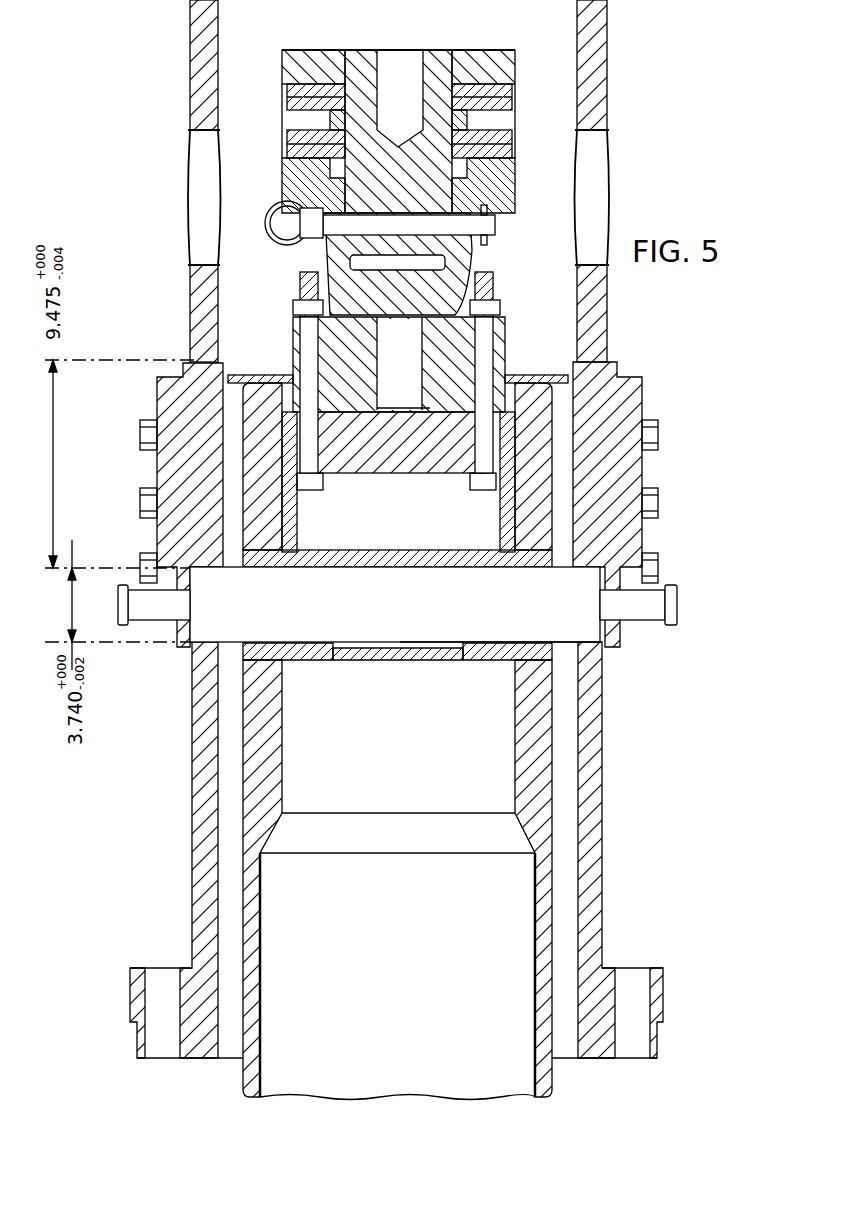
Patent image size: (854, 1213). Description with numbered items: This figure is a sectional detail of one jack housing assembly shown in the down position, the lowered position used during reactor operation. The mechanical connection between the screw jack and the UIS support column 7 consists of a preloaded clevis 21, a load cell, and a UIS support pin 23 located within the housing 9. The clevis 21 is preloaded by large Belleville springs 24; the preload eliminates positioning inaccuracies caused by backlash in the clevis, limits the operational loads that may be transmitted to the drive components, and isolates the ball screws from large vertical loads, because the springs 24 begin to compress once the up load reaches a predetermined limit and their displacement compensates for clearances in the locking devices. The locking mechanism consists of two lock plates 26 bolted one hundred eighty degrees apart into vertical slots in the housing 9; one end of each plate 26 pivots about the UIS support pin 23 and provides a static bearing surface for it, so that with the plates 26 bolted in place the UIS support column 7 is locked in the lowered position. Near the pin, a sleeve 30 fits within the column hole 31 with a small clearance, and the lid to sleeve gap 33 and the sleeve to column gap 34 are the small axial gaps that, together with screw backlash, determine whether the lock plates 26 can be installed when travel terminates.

The UIS support column 7 is at (263, 942).
The housing 9 is at (190, 78).
The preloaded clevis 21 is at (421, 164).
The UIS support pin 23 is at (493, 224).
The Belleville springs 24 is at (514, 95).
The lock plates 26 is at (188, 362).
The sleeve 30 is at (472, 658).
The column hole 31 is at (302, 661).
The lid to sleeve gap 33 is at (467, 641).
The sleeve to column gap 34 is at (513, 658).